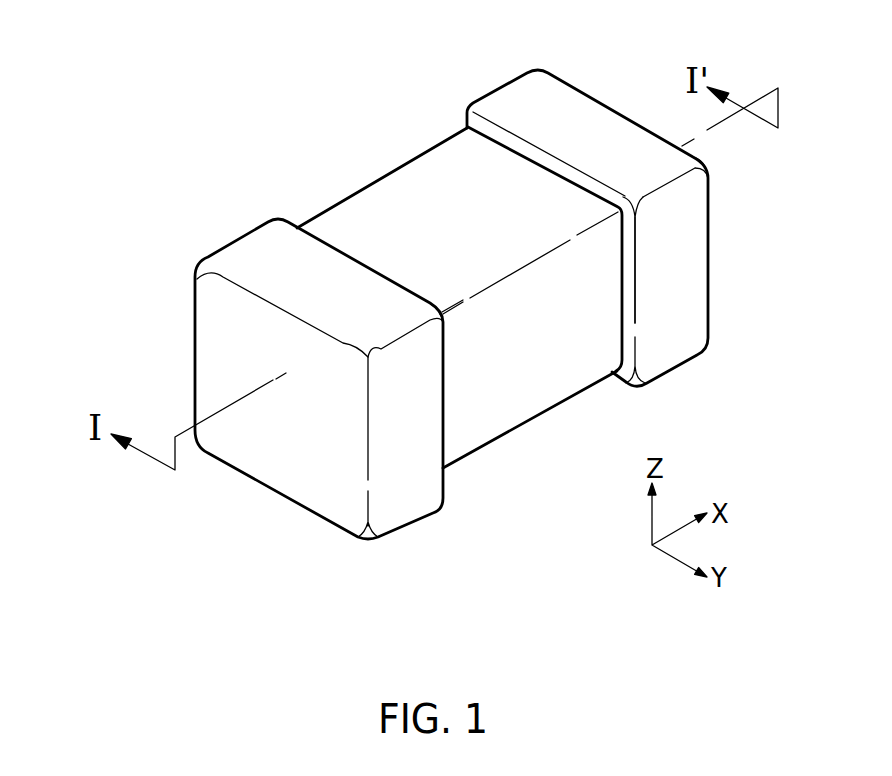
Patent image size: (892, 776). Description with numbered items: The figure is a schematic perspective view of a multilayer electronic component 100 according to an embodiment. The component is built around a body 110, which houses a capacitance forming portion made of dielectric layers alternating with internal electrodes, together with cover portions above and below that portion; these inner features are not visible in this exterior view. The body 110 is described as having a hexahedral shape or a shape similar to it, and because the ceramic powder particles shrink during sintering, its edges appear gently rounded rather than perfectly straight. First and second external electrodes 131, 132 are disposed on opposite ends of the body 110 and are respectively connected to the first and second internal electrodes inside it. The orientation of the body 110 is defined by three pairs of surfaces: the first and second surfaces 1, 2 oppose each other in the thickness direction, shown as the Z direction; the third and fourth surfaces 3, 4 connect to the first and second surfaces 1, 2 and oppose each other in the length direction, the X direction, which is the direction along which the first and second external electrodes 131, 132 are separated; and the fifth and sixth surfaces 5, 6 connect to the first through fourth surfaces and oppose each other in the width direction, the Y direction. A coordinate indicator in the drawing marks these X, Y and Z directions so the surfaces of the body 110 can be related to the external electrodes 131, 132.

The multilayer electronic component 100 is at (254, 80).
The body 110 is at (433, 283).
The first external electrode 131 is at (319, 354).
The second external electrode 132 is at (618, 205).
The first surface 1 is at (492, 390).
The second surface 2 is at (460, 173).
The third surface 3 is at (277, 448).
The fourth surface 4 is at (672, 236).
The fifth surface 5 is at (570, 390).
The sixth surface 6 is at (397, 197).